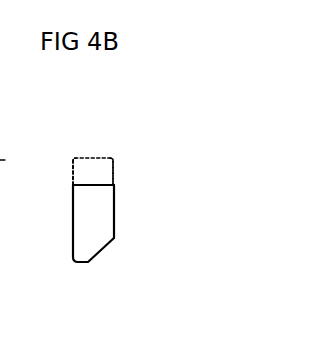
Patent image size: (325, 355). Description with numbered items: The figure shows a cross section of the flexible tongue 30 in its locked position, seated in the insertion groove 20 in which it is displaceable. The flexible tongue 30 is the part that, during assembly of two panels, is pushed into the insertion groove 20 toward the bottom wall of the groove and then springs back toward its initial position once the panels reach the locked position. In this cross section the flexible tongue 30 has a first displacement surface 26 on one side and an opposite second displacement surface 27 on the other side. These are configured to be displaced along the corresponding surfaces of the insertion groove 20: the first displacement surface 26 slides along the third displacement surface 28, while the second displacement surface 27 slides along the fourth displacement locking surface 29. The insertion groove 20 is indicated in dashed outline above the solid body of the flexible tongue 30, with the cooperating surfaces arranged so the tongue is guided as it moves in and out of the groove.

The insertion groove 20 is at (88, 165).
The first displacement surface 26 is at (114, 220).
The second displacement surface 27 is at (73, 212).
The third displacement surface 28 is at (113, 166).
The fourth displacement locking surface 29 is at (73, 172).
The flexible tongue 30 is at (85, 247).